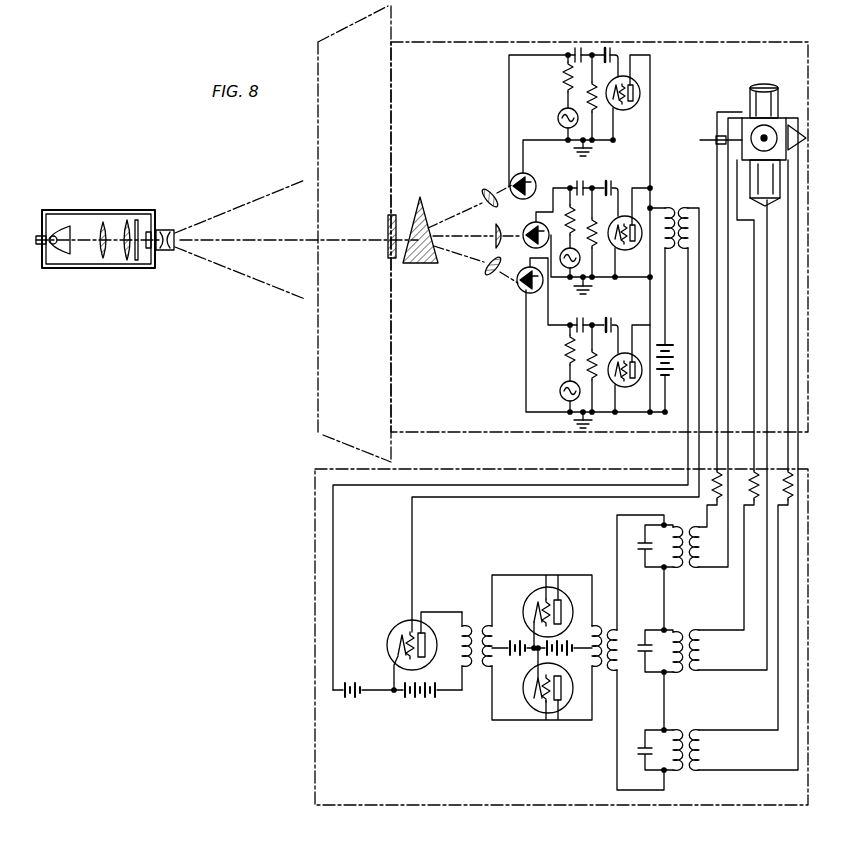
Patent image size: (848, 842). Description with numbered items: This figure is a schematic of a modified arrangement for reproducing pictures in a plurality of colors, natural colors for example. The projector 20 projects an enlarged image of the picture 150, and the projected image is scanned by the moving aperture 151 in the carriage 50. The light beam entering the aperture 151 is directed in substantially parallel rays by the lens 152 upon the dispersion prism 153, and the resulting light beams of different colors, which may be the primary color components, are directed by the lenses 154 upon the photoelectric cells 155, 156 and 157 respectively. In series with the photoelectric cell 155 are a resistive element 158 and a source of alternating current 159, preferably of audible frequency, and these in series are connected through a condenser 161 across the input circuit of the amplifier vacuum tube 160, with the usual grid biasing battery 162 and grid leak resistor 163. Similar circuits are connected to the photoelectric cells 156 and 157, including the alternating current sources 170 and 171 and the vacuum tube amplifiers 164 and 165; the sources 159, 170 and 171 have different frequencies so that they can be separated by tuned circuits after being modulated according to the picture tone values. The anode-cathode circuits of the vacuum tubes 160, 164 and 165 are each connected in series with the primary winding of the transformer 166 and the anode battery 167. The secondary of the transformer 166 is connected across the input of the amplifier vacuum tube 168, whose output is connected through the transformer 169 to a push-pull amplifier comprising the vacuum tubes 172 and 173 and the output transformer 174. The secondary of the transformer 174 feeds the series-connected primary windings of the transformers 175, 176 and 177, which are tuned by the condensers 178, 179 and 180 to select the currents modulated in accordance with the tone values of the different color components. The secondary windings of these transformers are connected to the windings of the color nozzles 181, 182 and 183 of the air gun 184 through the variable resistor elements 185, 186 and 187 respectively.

The projector 20 is at (80, 210).
The carriage 50 is at (414, 42).
The picture 150 is at (150, 228).
The moving aperture 151 is at (387, 243).
The lens 152 is at (393, 213).
The dispersion prism 153 is at (422, 201).
The lenses 154 is at (489, 190).
The photoelectric cell 155 is at (527, 173).
The photoelectric cell 156 is at (536, 222).
The photoelectric cell 157 is at (528, 293).
The resistive element 158 is at (548, 77).
The source of alternating current 159 is at (558, 119).
The amplifier vacuum tube 160 is at (620, 109).
The condenser 161 is at (580, 48).
The grid biasing battery 162 is at (611, 48).
The grid leak resistor 163 is at (589, 99).
The vacuum tube amplifier 164 is at (628, 214).
The vacuum tube amplifier 165 is at (628, 352).
The transformer 166 is at (672, 207).
The anode battery 167 is at (678, 372).
The amplifier vacuum tube 168 is at (394, 628).
The transformer 169 is at (478, 624).
The alternating current source 170 is at (566, 270).
The alternating current source 171 is at (561, 385).
The vacuum tube 172 is at (551, 588).
The vacuum tube 173 is at (552, 716).
The output transformer 174 is at (607, 675).
The transformer 175 is at (688, 565).
The transformer 176 is at (688, 672).
The transformer 177 is at (689, 773).
The condenser 178 is at (644, 553).
The condenser 179 is at (644, 660).
The condenser 180 is at (644, 761).
The color nozzle 181 is at (762, 84).
The color nozzle 182 is at (750, 128).
The color nozzle 183 is at (752, 178).
The air gun 184 is at (789, 120).
The variable resistor element 185 is at (718, 555).
The variable resistor element 186 is at (753, 504).
The variable resistor element 187 is at (788, 504).